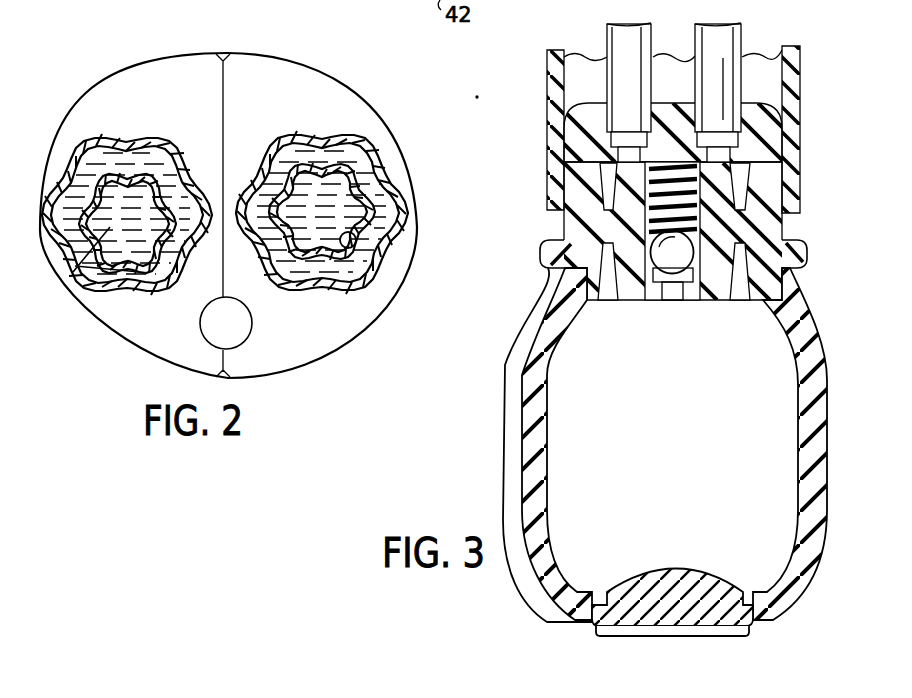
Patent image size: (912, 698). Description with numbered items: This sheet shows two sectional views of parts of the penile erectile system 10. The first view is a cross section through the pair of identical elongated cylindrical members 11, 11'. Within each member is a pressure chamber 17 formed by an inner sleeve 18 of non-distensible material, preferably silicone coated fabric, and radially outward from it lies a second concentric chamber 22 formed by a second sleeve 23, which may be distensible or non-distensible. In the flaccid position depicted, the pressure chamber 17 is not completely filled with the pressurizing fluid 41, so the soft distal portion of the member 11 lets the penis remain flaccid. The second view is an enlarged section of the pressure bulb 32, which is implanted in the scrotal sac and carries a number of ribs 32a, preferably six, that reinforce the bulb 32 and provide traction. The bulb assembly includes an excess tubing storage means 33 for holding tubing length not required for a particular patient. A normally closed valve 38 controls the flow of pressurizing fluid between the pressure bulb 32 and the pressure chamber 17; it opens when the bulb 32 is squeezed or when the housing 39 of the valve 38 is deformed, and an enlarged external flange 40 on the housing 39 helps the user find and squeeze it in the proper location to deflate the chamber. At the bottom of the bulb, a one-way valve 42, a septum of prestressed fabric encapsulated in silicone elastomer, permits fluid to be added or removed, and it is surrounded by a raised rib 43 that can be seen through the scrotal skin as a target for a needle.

In FIG. 2, the penile erectile system 10 is at (88, 141).
In FIG. 2, the elongated cylindrical member 11' is at (129, 146).
In FIG. 2, the elongated cylindrical member 11 is at (349, 180).
In FIG. 2, the second concentric chamber 22 is at (367, 173).
In FIG. 2, the second sleeve 23 is at (393, 213).
In FIG. 2, the pressure chamber 17 is at (375, 270).
In FIG. 2, the inner sleeve 18 is at (343, 288).
In FIG. 2, the pressurizing fluid 41 is at (73, 272).
In FIG. 3, the excess tubing storage means 33 is at (800, 108).
In FIG. 3, the valve 38 is at (790, 228).
In FIG. 3, the enlarged external flange 40 is at (540, 253).
In FIG. 3, the housing 39 is at (623, 277).
In FIG. 3, the ribs 32a is at (503, 360).
In FIG. 3, the pressure bulb 32 is at (827, 440).
In FIG. 3, the one-way valve 42 is at (665, 617).
In FIG. 3, the raised rib 43 is at (742, 634).